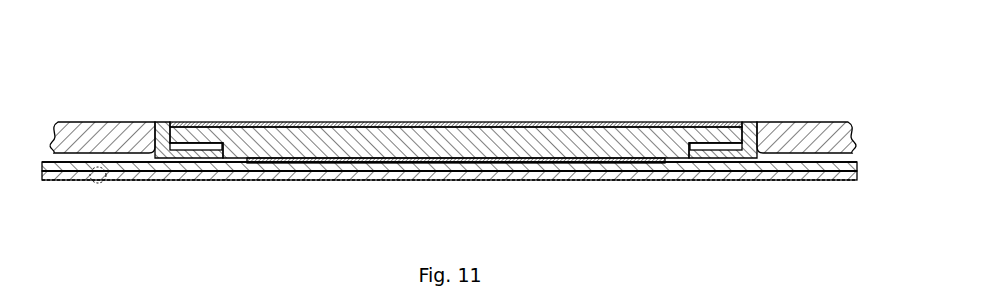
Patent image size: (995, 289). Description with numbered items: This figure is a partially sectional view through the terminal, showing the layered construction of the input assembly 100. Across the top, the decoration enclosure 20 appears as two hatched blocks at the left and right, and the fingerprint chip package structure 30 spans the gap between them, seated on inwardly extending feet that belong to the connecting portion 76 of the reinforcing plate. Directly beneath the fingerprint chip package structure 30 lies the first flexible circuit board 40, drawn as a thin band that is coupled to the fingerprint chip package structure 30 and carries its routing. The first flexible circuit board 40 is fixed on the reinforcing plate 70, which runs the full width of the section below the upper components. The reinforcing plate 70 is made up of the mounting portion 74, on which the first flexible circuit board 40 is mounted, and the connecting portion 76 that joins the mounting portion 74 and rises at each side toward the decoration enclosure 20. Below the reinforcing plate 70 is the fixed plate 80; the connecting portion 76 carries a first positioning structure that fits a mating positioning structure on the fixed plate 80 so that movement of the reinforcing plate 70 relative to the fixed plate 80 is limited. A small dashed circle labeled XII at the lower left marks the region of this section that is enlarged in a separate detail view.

The input assembly 100 is at (224, 56).
The decoration enclosure 20 is at (164, 122).
The fingerprint chip package structure 30 is at (357, 128).
The first flexible circuit board 40 is at (350, 168).
The reinforcing plate 70 is at (393, 177).
The mounting portion 74 is at (592, 173).
The connecting portion 76 is at (160, 170).
The fixed plate 80 is at (472, 173).
The detail section XII is at (100, 183).